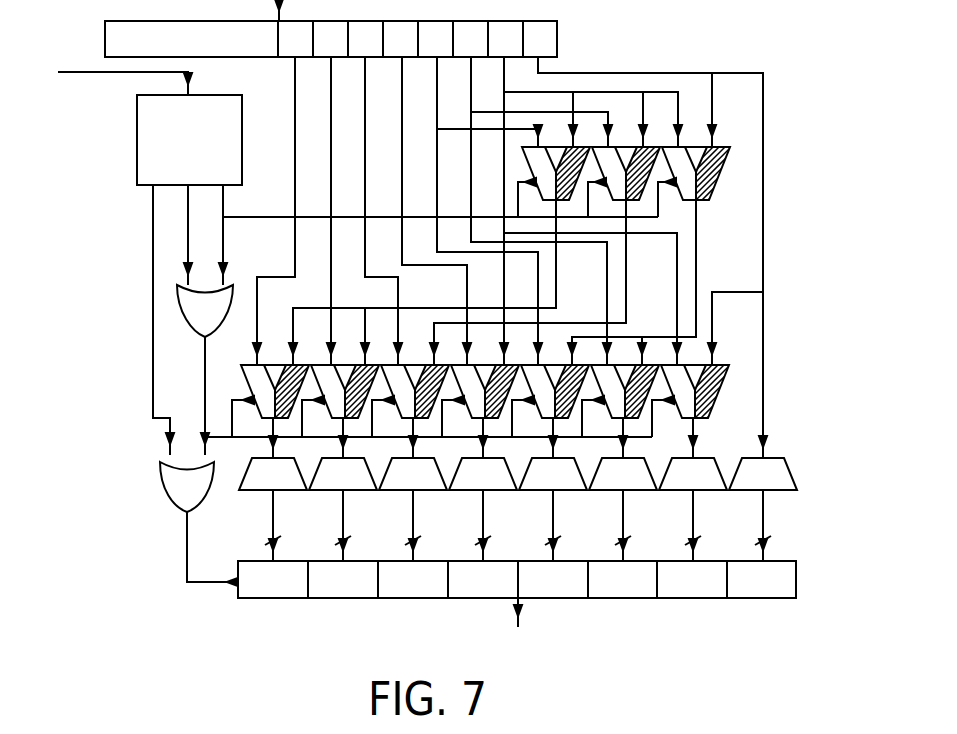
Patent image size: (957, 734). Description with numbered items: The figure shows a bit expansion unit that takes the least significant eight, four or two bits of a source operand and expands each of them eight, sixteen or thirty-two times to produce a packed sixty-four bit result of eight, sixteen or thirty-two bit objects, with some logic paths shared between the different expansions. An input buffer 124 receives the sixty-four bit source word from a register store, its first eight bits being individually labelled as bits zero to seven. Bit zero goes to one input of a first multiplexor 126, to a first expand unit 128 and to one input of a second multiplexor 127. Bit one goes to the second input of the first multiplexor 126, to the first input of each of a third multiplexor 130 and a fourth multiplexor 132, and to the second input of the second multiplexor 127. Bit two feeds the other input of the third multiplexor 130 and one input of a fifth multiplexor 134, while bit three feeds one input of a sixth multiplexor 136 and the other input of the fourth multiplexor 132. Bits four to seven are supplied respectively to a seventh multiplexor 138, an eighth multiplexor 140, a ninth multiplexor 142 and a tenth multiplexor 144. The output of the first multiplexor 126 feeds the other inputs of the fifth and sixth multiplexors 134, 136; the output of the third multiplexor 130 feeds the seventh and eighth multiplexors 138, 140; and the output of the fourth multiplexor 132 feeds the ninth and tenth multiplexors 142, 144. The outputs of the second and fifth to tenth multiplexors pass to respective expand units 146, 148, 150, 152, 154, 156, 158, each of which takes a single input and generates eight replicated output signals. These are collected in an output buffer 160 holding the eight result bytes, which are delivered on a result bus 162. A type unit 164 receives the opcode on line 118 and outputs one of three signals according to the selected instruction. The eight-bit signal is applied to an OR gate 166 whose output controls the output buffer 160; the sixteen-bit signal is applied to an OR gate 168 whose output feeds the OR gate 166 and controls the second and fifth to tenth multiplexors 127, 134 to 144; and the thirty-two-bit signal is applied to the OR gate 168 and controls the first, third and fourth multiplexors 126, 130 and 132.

The opcode line 118 is at (68, 72).
The input buffer 124 is at (557, 38).
The first multiplexor 126 is at (715, 176).
The second multiplexor 127 is at (713, 404).
The first expand unit 128 is at (787, 491).
The third multiplexor 130 is at (620, 147).
The fourth multiplexor 132 is at (524, 166).
The fifth multiplexor 134 is at (650, 363).
The sixth multiplexor 136 is at (553, 363).
The seventh multiplexor 138 is at (485, 363).
The eighth multiplexor 140 is at (416, 365).
The ninth multiplexor 142 is at (316, 367).
The tenth multiplexor 144 is at (240, 383).
The expand unit 146 is at (717, 491).
The expand unit 148 is at (647, 491).
The expand unit 150 is at (577, 491).
The expand unit 152 is at (507, 491).
The expand unit 154 is at (437, 491).
The expand unit 156 is at (367, 491).
The expand unit 158 is at (297, 491).
The output buffer 160 is at (273, 599).
The result bus 162 is at (518, 603).
The type unit 164 is at (242, 107).
The OR gate 166 is at (160, 498).
The OR gate 168 is at (233, 292).